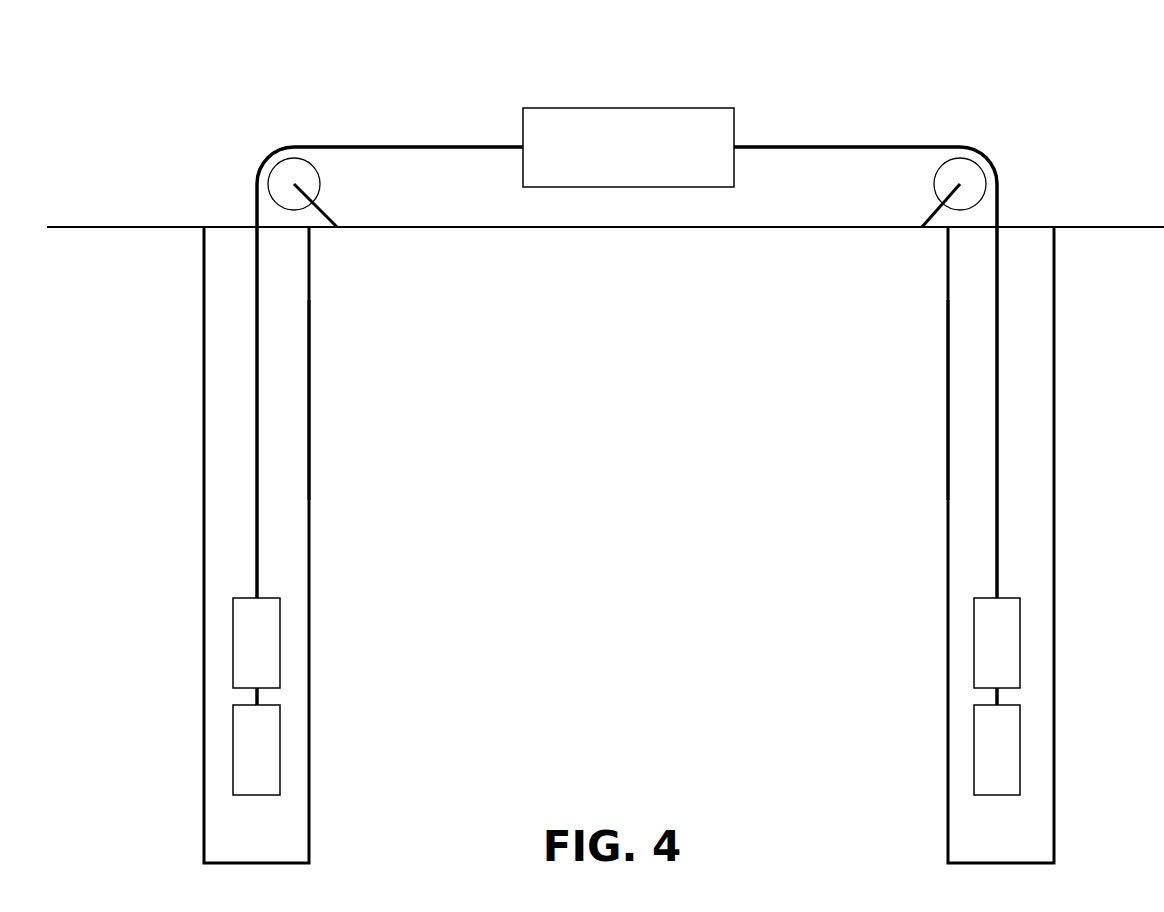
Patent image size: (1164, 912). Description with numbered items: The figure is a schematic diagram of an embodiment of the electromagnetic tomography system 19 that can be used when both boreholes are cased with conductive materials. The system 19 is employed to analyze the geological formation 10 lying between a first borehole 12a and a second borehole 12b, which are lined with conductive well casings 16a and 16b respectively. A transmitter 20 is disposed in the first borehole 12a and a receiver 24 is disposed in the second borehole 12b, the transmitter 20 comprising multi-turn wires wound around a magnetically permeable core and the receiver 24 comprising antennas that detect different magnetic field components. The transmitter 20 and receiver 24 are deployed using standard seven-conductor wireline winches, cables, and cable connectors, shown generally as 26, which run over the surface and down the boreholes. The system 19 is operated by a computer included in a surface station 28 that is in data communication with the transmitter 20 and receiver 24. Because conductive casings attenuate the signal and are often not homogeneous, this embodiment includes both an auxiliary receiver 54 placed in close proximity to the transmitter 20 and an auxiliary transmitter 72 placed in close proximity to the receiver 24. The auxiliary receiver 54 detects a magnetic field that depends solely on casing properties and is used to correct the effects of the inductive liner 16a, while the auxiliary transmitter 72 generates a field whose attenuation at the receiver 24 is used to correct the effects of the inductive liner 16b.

The geological formation 10 is at (758, 278).
The borehole 12a is at (283, 348).
The borehole 12b is at (963, 368).
The conductive well casing 16a is at (312, 458).
The conductive well casing 16b is at (948, 457).
The electromagnetic tomography system 19 is at (476, 102).
The transmitter 20 is at (244, 654).
The receiver 24 is at (984, 654).
The wireline winches, cables, and cable connectors 26 is at (256, 169).
The surface station 28 is at (615, 157).
The auxiliary receiver 54 is at (244, 760).
The auxiliary transmitter 72 is at (984, 760).